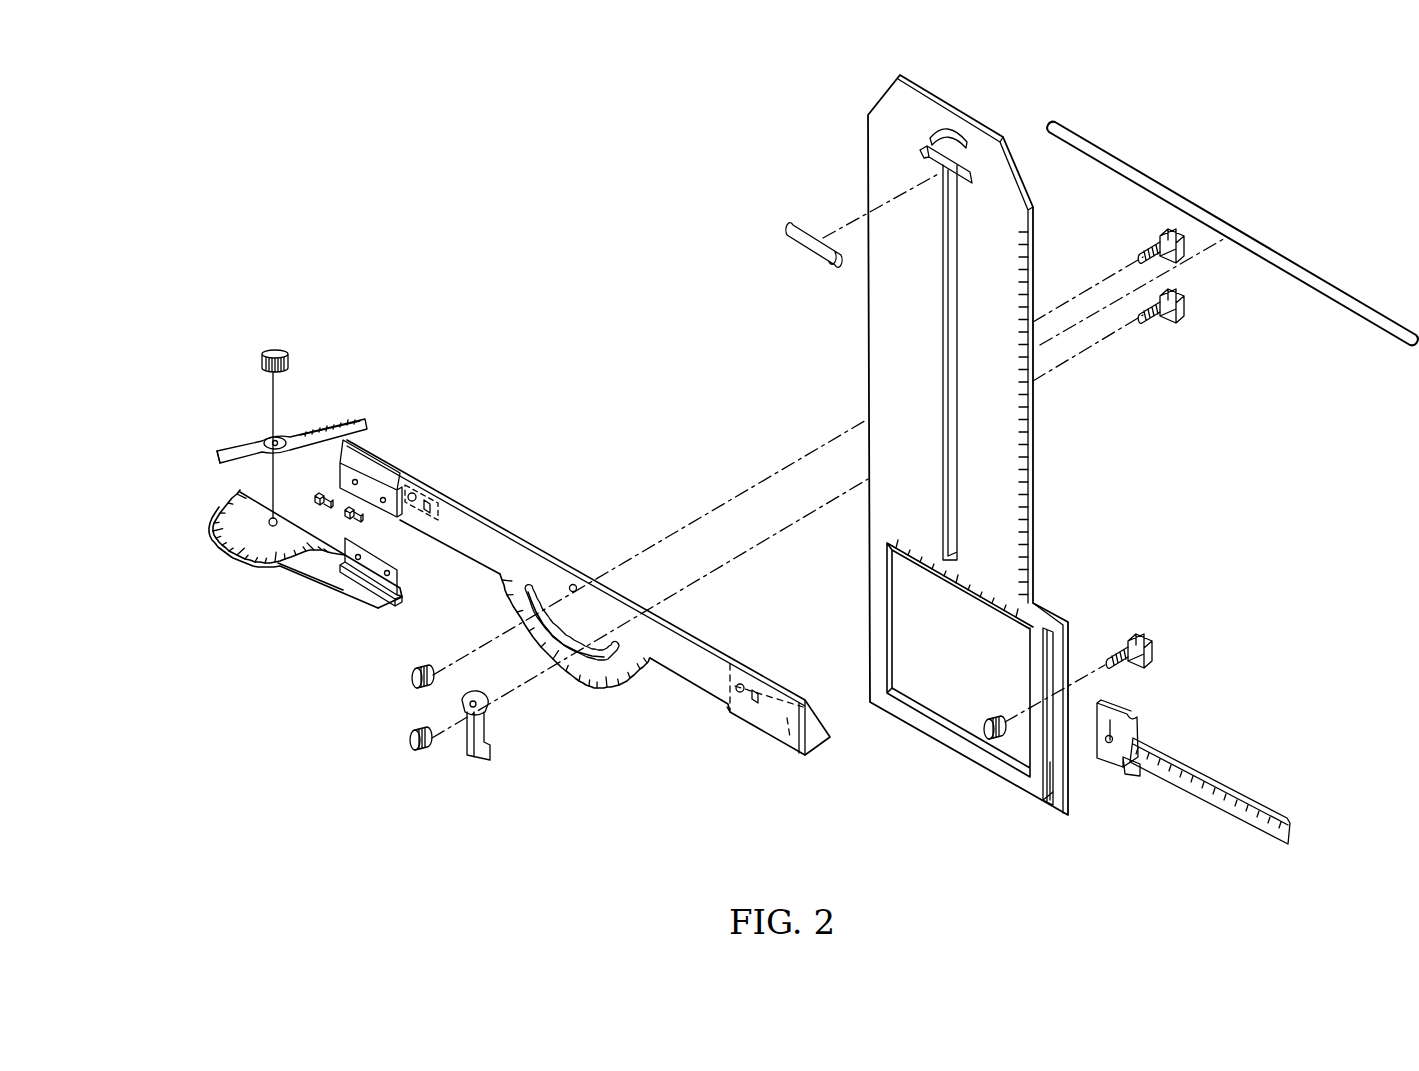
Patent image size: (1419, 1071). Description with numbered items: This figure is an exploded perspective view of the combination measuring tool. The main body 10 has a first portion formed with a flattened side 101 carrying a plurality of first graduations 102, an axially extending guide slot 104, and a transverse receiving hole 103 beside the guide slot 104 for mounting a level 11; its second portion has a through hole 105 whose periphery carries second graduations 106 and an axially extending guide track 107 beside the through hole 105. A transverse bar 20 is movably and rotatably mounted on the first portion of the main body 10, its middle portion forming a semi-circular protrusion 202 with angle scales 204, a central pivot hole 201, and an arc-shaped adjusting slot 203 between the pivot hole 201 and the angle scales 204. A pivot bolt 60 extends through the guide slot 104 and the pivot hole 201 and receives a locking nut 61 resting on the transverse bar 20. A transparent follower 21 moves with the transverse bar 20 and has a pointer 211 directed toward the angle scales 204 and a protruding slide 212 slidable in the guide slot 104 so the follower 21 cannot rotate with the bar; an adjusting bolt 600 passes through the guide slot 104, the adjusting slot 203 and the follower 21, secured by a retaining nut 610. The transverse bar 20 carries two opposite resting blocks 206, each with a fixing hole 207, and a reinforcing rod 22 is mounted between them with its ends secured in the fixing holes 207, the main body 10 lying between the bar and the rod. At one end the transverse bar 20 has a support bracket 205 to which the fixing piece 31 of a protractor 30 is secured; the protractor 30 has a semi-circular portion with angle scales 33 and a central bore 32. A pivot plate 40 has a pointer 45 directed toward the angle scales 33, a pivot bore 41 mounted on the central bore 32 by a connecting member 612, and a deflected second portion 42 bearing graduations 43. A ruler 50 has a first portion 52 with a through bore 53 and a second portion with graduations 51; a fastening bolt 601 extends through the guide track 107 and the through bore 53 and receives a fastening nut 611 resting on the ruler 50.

The main body 10 is at (861, 402).
The level 11 is at (790, 233).
The flattened side 101 is at (1037, 415).
The first graduations 102 is at (1037, 472).
The transverse receiving hole 103 is at (928, 150).
The guide slot 104 is at (944, 318).
The through hole 105 is at (945, 705).
The second graduations 106 is at (1040, 775).
The guide track 107 is at (1058, 788).
The transverse bar 20 is at (591, 617).
The pivot hole 201 is at (575, 584).
The semi-circular protrusion 202 is at (565, 695).
The arc-shaped adjusting slot 203 is at (637, 642).
The angle scales 204 is at (615, 692).
The support bracket 205 is at (385, 495).
The resting blocks 206 is at (450, 500).
The fixing hole 207 is at (432, 490).
The follower 21 is at (474, 778).
The pointer 211 is at (462, 710).
The protruding slide 212 is at (491, 752).
The reinforcing rod 22 is at (1213, 222).
The protractor 30 is at (309, 533).
The fixing piece 31 is at (403, 566).
The central bore 32 is at (270, 526).
The angle scales 33 is at (216, 540).
The pivot plate 40 is at (249, 427).
The pivot bore 41 is at (266, 440).
The deflected second portion 42 is at (325, 428).
The graduations 43 is at (352, 422).
The pointer 45 is at (216, 458).
The ruler 50 is at (1223, 761).
The graduations 51 is at (1250, 795).
The first portion 52 is at (1132, 772).
The through bore 53 is at (1107, 742).
The pivot bolt 60 is at (1146, 245).
The adjusting bolt 600 is at (1186, 303).
The fastening bolt 601 is at (1130, 640).
The locking nut 61 is at (410, 680).
The retaining nut 610 is at (408, 742).
The fastening nut 611 is at (986, 737).
The connecting member 612 is at (272, 348).